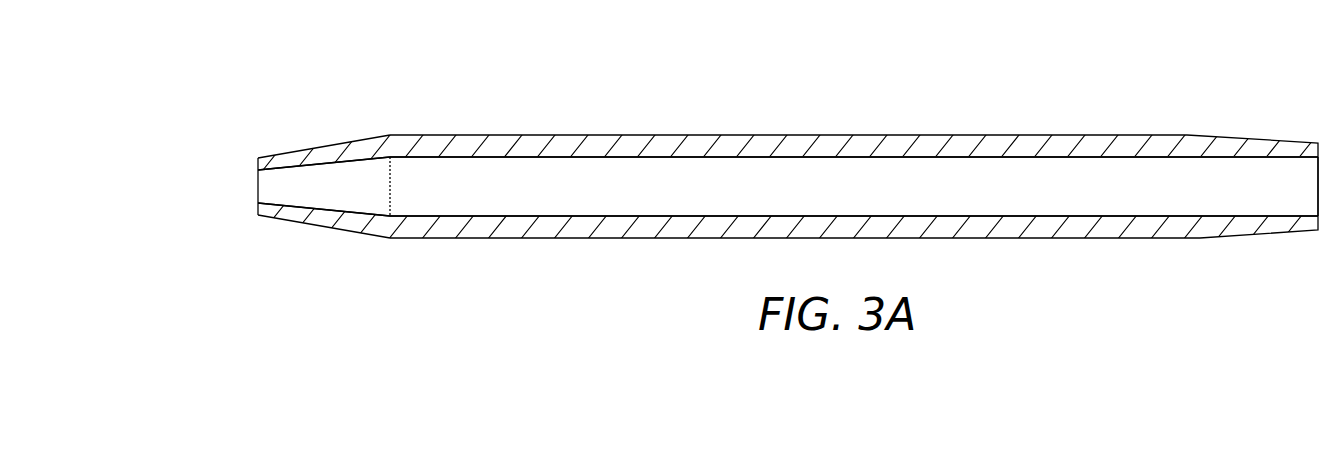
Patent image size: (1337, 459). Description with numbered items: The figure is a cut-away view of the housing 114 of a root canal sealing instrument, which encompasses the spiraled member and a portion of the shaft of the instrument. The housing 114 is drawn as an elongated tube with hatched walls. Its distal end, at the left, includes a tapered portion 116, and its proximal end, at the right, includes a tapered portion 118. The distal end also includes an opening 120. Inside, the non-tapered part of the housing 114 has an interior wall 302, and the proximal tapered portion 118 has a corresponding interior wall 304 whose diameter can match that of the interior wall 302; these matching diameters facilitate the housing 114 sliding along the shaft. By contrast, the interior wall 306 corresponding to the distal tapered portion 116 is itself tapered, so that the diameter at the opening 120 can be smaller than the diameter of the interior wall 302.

The housing 114 is at (658, 137).
The tapered portion 116 is at (340, 145).
The tapered portion 118 is at (1277, 142).
The opening 120 is at (258, 192).
The interior wall 302 is at (620, 155).
The interior wall 304 is at (1307, 148).
The interior wall 306 is at (363, 158).